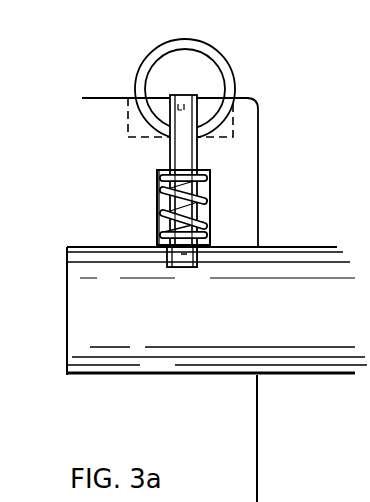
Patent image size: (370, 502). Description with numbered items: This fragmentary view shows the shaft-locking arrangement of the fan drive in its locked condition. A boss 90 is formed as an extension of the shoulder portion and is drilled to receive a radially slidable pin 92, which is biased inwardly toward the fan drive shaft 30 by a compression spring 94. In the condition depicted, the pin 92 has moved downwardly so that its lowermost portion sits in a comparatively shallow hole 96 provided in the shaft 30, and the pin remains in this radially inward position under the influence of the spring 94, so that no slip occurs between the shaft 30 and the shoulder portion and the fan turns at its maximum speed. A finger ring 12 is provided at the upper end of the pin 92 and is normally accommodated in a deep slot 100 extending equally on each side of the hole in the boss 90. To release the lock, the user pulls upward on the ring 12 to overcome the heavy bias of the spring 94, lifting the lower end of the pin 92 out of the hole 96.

The finger ring 12 is at (201, 46).
The fan drive shaft 30 is at (278, 372).
The boss 90 is at (246, 177).
The radially slidable pin 92 is at (198, 155).
The compression spring 94 is at (158, 192).
The shallow hole 96 is at (176, 268).
The deep slot 100 is at (125, 128).